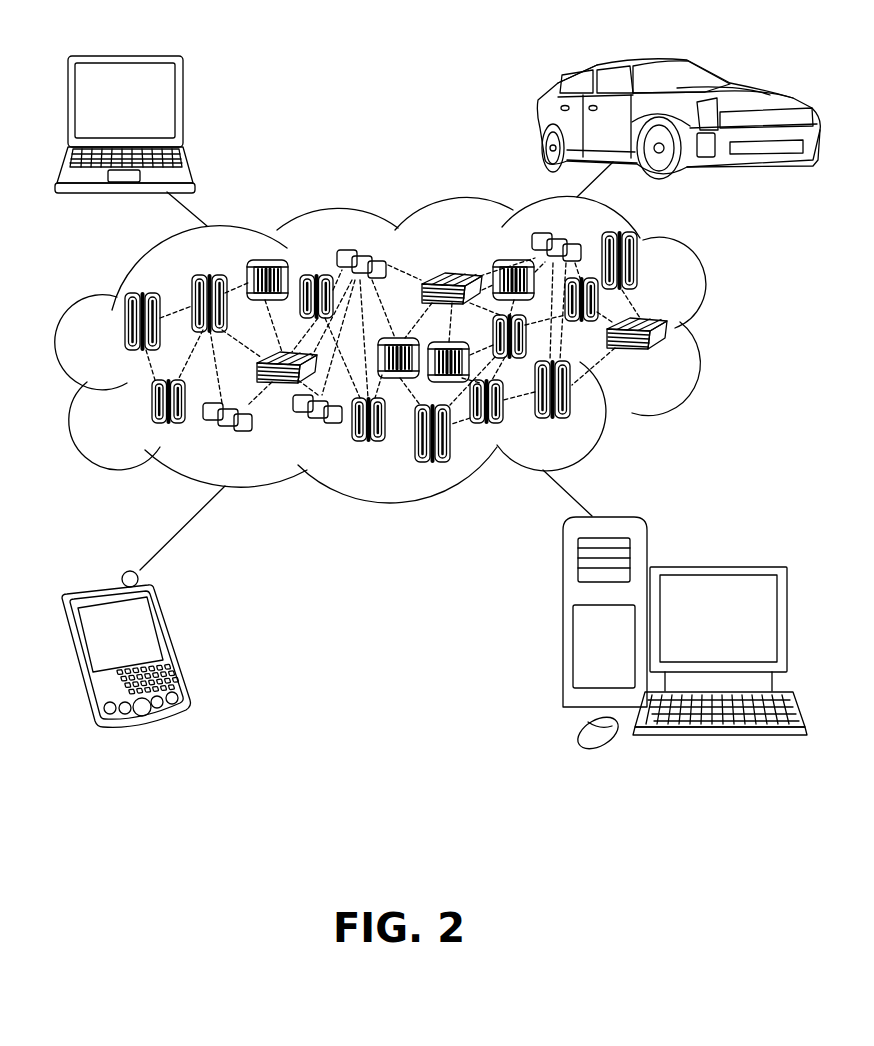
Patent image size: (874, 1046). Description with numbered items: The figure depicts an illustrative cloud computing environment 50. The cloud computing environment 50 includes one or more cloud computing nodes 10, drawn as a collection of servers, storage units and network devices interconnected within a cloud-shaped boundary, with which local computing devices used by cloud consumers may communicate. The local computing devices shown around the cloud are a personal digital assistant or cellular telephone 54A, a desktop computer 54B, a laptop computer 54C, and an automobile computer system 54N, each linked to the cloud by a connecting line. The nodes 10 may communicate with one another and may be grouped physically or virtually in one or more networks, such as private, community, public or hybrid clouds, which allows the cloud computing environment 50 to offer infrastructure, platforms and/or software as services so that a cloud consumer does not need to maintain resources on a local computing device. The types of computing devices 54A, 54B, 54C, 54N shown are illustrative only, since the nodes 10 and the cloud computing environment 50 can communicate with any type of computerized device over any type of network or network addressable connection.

The cloud computing node 10 is at (677, 354).
The cloud computing environment 50 is at (718, 331).
The personal digital assistant (PDA) or cellular telephone 54A is at (173, 645).
The desktop computer 54B is at (715, 564).
The laptop computer 54C is at (183, 108).
The automobile computer system 54N is at (539, 122).